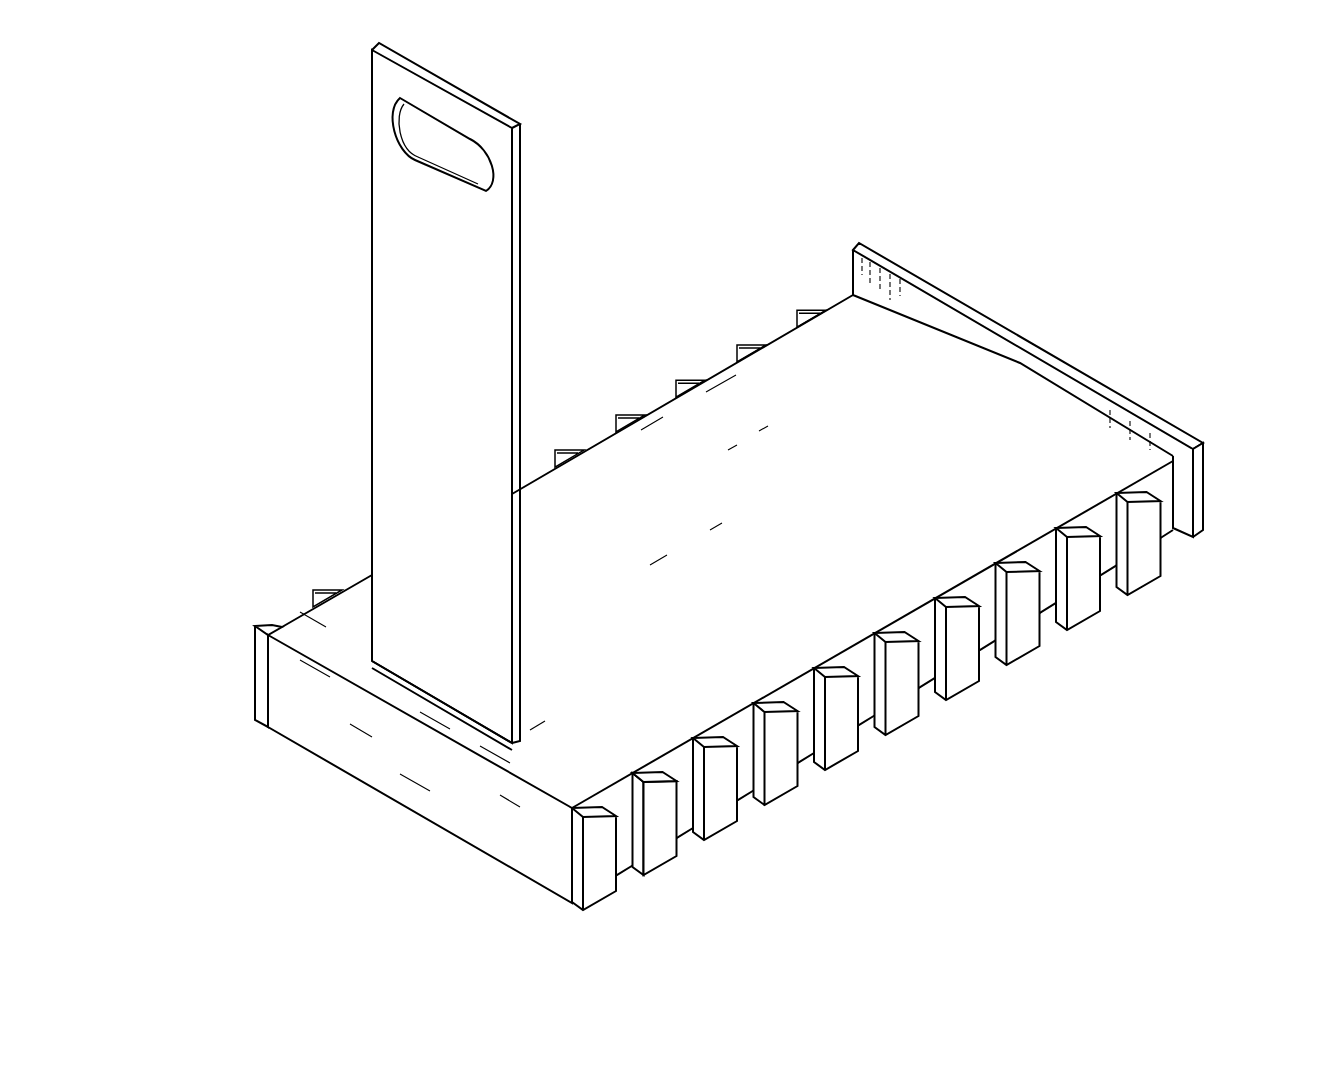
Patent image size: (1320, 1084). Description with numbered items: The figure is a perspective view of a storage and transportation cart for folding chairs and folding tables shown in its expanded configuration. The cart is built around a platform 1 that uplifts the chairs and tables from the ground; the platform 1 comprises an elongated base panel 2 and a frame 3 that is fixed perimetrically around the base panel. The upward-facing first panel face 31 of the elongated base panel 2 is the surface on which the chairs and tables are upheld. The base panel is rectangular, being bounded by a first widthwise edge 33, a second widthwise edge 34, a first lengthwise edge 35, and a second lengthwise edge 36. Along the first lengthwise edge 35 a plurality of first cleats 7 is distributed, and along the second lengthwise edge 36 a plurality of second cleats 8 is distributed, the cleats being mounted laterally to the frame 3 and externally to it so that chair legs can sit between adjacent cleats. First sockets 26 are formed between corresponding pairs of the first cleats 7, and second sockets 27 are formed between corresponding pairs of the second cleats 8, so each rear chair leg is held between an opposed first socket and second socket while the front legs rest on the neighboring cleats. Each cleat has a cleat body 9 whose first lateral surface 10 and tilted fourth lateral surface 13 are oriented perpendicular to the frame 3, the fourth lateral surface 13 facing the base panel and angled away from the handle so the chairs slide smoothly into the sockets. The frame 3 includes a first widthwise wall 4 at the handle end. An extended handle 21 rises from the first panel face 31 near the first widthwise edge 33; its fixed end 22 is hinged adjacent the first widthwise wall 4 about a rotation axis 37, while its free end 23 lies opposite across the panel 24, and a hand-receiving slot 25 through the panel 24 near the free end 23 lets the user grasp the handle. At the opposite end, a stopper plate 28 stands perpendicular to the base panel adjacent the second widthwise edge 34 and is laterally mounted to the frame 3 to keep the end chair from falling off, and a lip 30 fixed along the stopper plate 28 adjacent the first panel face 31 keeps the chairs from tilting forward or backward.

The platform 1 is at (262, 756).
The elongated base panel 2 is at (846, 290).
The frame 3 is at (393, 803).
The first widthwise wall 4 is at (450, 818).
The first cleats 7 is at (262, 618).
The second cleats 8 is at (1157, 578).
The cleat body 9 is at (662, 866).
The first lateral surface 10 is at (636, 868).
The fourth lateral surface 13 is at (648, 777).
The extended handle 21 is at (534, 231).
The fixed end 22 is at (355, 666).
The free end 23 is at (353, 58).
The panel 24 is at (371, 440).
The hand-receiving slot 25 is at (388, 128).
The first sockets 26 is at (598, 431).
The second sockets 27 is at (1098, 496).
The stopper plate 28 is at (1206, 474).
The lip 30 is at (1200, 463).
The first panel face 31 is at (677, 554).
The first widthwise edge 33 is at (413, 716).
The second widthwise edge 34 is at (1100, 394).
The first lengthwise edge 35 is at (305, 606).
The second lengthwise edge 36 is at (878, 622).
The rotation axis 37 is at (524, 746).